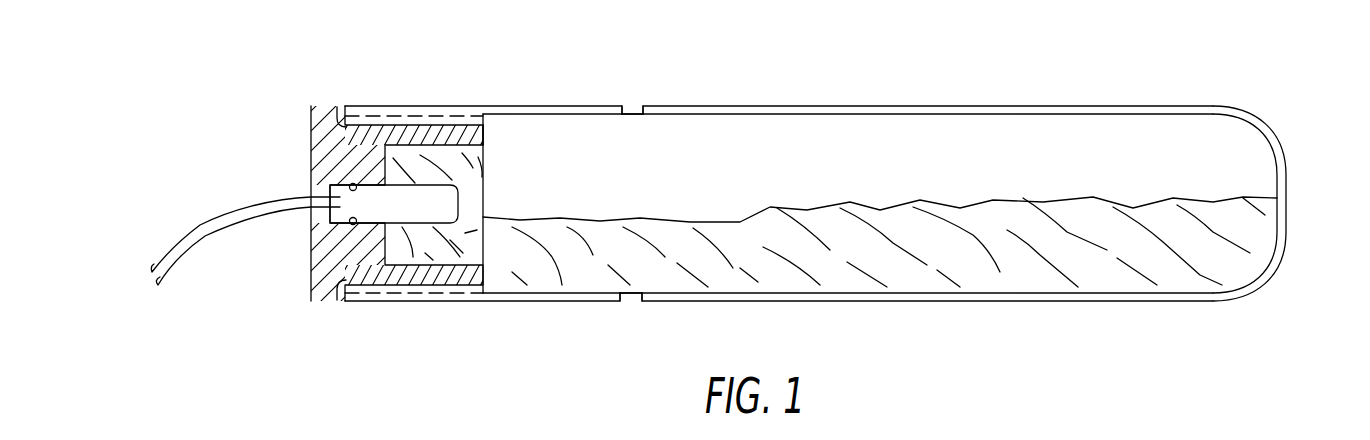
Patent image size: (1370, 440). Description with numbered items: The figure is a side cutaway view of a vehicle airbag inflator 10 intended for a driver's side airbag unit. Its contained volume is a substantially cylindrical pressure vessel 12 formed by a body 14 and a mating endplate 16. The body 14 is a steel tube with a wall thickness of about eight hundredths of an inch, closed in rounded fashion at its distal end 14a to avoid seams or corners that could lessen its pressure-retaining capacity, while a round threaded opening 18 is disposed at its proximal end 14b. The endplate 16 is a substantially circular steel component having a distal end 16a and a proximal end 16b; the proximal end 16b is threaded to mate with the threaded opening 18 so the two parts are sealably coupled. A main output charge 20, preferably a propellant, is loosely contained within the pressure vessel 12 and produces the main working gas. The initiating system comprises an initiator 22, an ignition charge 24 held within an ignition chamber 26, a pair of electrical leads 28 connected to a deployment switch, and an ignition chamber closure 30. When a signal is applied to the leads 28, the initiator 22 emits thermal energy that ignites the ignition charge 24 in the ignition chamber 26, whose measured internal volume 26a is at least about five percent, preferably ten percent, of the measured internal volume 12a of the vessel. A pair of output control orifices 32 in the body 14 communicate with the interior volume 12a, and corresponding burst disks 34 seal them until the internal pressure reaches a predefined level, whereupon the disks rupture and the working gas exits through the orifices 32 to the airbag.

The vehicle airbag inflator 10 is at (935, 79).
The pressure vessel 12 is at (741, 103).
The measured internal volume of the contained volume 12a is at (1020, 127).
The body 14 is at (838, 105).
The distal end 14a is at (1275, 139).
The proximal end 14b is at (429, 104).
The endplate 16 is at (310, 128).
The distal end of endplate 16a is at (310, 160).
The proximal end of endplate 16b is at (483, 132).
The threaded opening 18 is at (345, 124).
The main output charge 20 is at (962, 268).
The initiator 22 is at (418, 248).
The ignition charge 24 is at (442, 250).
The ignition chamber 26 is at (465, 170).
The measured internal volume of ignition chamber 26a is at (441, 154).
The electrical leads 28 is at (237, 213).
The ignition chamber closure 30 is at (485, 176).
The output control orifices 32 is at (631, 104).
The burst disks 34 is at (621, 113).